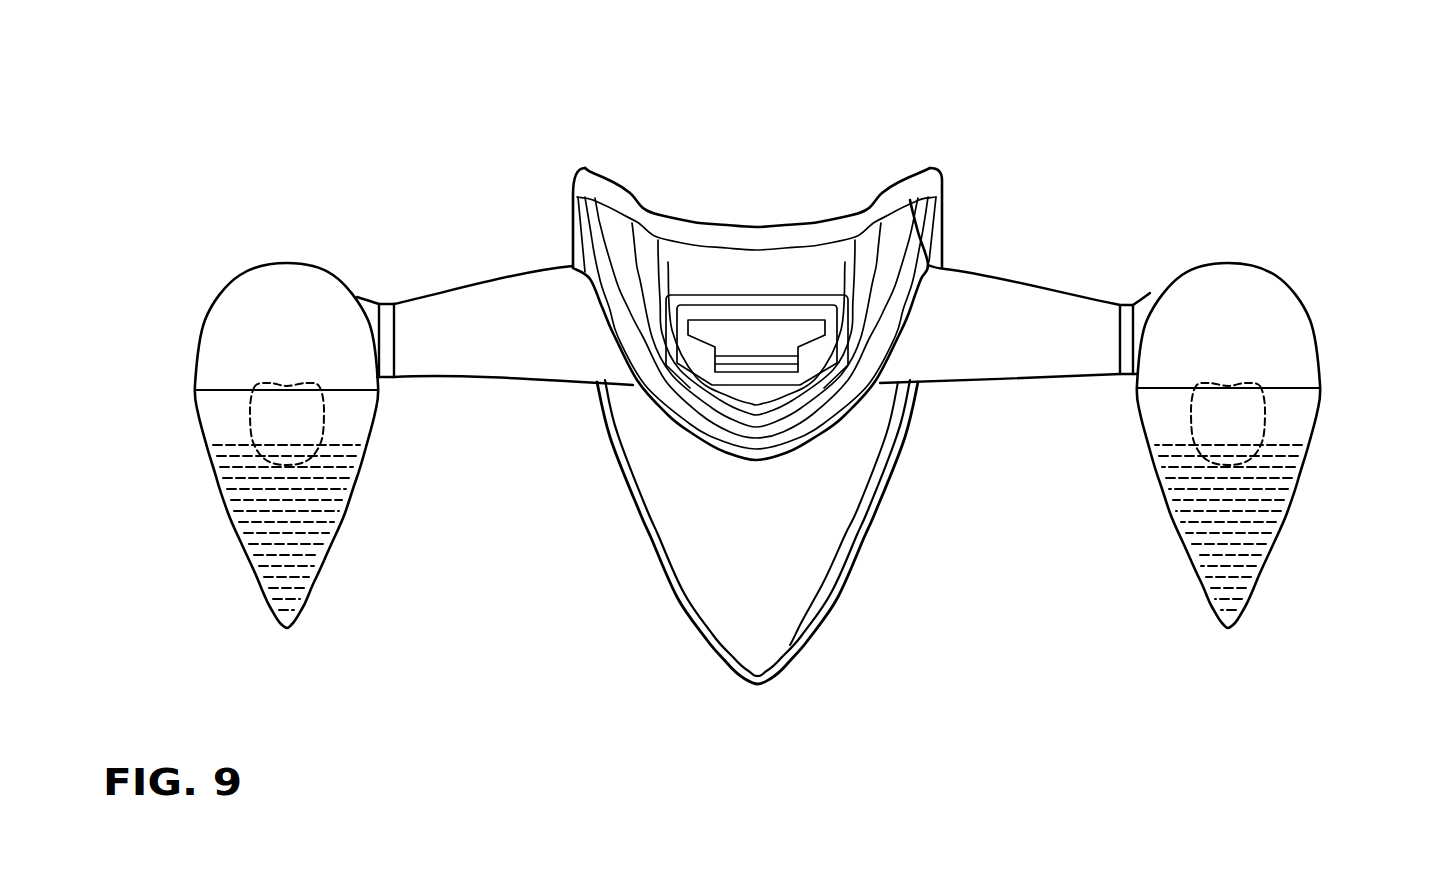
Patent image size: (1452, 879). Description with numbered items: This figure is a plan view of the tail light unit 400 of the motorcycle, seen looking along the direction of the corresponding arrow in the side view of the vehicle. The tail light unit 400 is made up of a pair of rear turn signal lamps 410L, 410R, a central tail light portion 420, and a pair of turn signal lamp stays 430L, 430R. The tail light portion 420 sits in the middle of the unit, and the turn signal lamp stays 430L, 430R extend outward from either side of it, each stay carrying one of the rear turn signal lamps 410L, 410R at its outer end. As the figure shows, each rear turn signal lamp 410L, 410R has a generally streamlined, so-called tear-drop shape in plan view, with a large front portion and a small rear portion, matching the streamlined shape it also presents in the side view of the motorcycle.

The tail light unit 400 is at (952, 152).
The rear turn signal lamp 410L is at (233, 308).
The rear turn signal lamp 410R is at (1290, 333).
The tail light portion 420 is at (800, 580).
The turn signal lamp stay 430L is at (482, 355).
The turn signal lamp stay 430R is at (1034, 355).